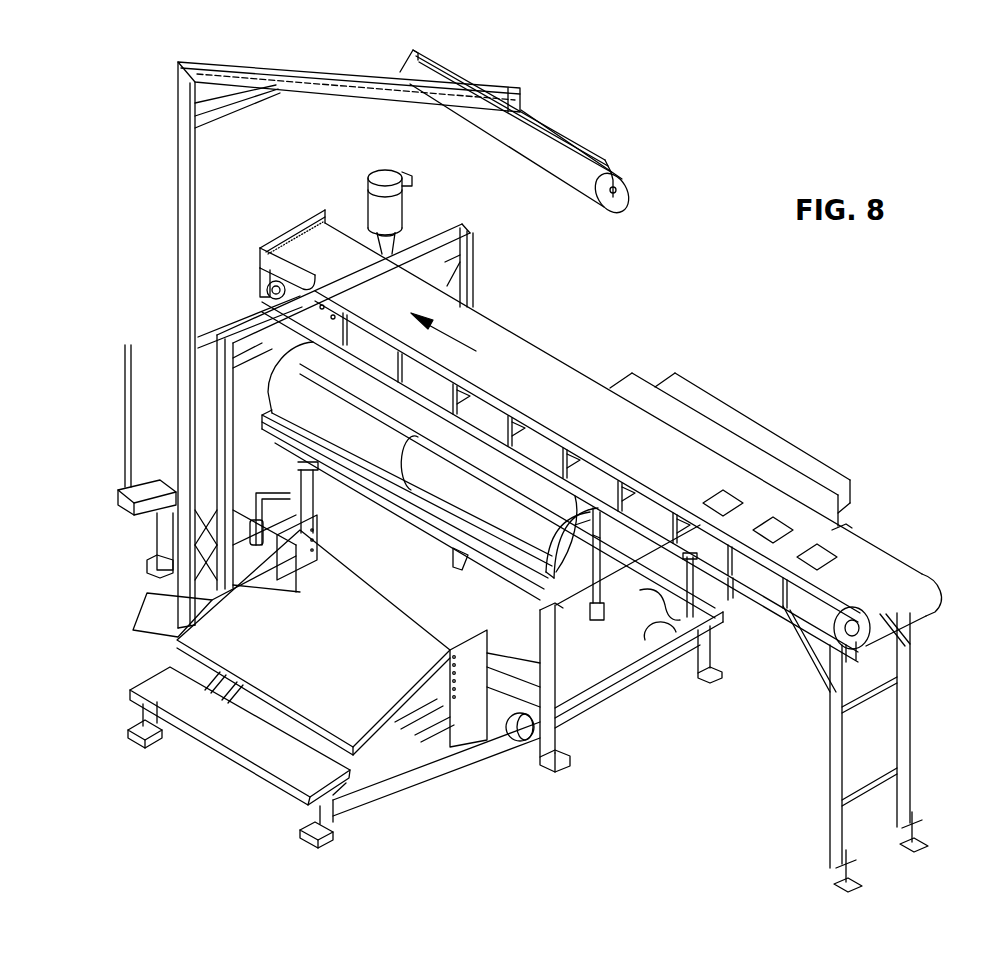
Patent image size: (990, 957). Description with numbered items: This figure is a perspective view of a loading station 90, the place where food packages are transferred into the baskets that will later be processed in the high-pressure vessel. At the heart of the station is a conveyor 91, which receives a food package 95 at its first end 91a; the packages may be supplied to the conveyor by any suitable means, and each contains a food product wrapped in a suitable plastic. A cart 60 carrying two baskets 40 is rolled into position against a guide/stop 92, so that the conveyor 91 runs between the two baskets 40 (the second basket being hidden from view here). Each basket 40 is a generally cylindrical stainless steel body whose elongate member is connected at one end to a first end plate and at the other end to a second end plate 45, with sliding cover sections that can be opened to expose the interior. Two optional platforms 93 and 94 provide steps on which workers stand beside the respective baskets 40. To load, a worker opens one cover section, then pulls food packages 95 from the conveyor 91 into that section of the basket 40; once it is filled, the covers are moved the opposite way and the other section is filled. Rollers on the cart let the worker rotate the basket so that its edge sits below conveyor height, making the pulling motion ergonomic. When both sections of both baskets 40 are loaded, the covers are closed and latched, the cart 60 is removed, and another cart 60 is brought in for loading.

The loading station 90 is at (926, 326).
The conveyor 91 is at (551, 402).
The first end 91a is at (882, 554).
The platform 94 is at (803, 457).
The food package 95 is at (789, 541).
The basket 40 is at (343, 429).
The second end plate 45 is at (578, 582).
The cart 60 is at (540, 607).
The guide/stop 92 is at (643, 660).
The platform 93 is at (340, 670).